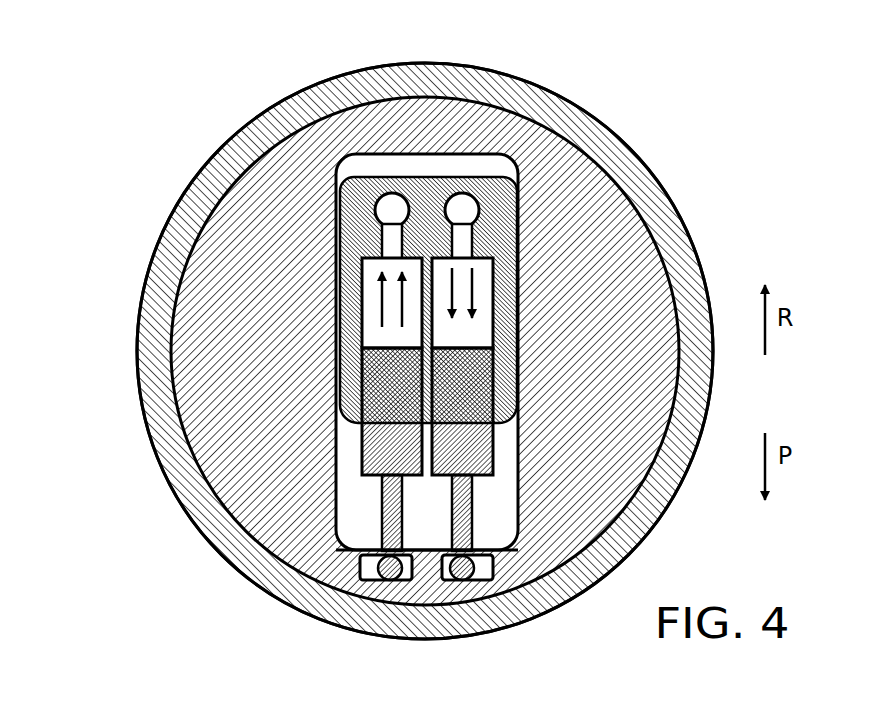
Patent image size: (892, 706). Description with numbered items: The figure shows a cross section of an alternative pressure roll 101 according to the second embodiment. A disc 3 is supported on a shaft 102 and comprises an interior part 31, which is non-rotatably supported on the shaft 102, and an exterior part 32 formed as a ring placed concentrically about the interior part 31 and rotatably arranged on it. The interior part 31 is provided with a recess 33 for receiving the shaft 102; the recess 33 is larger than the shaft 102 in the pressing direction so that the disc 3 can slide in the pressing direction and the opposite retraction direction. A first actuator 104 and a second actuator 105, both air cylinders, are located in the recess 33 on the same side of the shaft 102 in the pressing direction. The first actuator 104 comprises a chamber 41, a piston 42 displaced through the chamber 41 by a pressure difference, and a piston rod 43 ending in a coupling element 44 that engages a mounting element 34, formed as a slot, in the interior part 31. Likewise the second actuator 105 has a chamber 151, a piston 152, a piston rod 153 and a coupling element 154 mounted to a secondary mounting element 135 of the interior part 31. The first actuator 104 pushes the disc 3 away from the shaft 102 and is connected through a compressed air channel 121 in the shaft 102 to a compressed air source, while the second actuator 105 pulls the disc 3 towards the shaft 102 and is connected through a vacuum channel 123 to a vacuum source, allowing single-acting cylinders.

The alternative pressure roll 101 is at (198, 97).
The disc 3 is at (602, 122).
The shaft 102 is at (193, 190).
The interior part 31 is at (187, 363).
The exterior part 32 is at (200, 510).
The recess 33 is at (345, 514).
The piston rod 43 is at (525, 527).
The first actuator 104 is at (500, 190).
The vacuum channel 123 is at (386, 205).
The compressed air channel 121 is at (456, 204).
The chamber 151 is at (340, 242).
The second actuator 105 is at (362, 327).
The chamber 41 is at (494, 327).
The piston 152 is at (362, 452).
The piston 42 is at (495, 442).
The piston rod 153 is at (340, 555).
The mounting element 34 is at (455, 582).
The coupling element 154 is at (385, 577).
The coupling element 44 is at (493, 575).
The secondary mounting element 135 is at (388, 581).